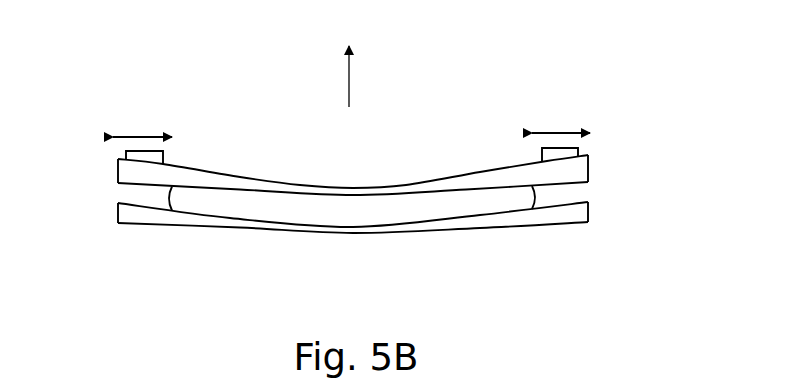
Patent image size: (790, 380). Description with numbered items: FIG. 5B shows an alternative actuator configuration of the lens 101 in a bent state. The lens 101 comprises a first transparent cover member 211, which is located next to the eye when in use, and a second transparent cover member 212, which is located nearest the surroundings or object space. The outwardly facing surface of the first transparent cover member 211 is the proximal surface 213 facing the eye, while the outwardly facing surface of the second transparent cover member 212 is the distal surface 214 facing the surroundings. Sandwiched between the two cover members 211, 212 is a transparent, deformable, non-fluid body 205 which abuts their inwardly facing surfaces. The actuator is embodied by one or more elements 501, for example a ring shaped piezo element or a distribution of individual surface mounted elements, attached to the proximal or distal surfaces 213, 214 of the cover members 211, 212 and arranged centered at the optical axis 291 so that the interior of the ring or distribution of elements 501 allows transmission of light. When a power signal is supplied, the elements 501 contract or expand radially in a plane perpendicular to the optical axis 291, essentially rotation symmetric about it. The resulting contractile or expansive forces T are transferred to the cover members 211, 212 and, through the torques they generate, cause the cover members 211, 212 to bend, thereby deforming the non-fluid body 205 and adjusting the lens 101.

The lens 101 is at (190, 77).
The optical axis 291 is at (320, 76).
The contractile or expansive forces T is at (351, 120).
The non-fluid body 205 is at (295, 212).
The first transparent cover member 211 is at (347, 192).
The proximal surface 213 is at (428, 182).
The second transparent cover member 212 is at (245, 225).
The distal surface 214 is at (457, 232).
The actuator element 501 is at (162, 155).